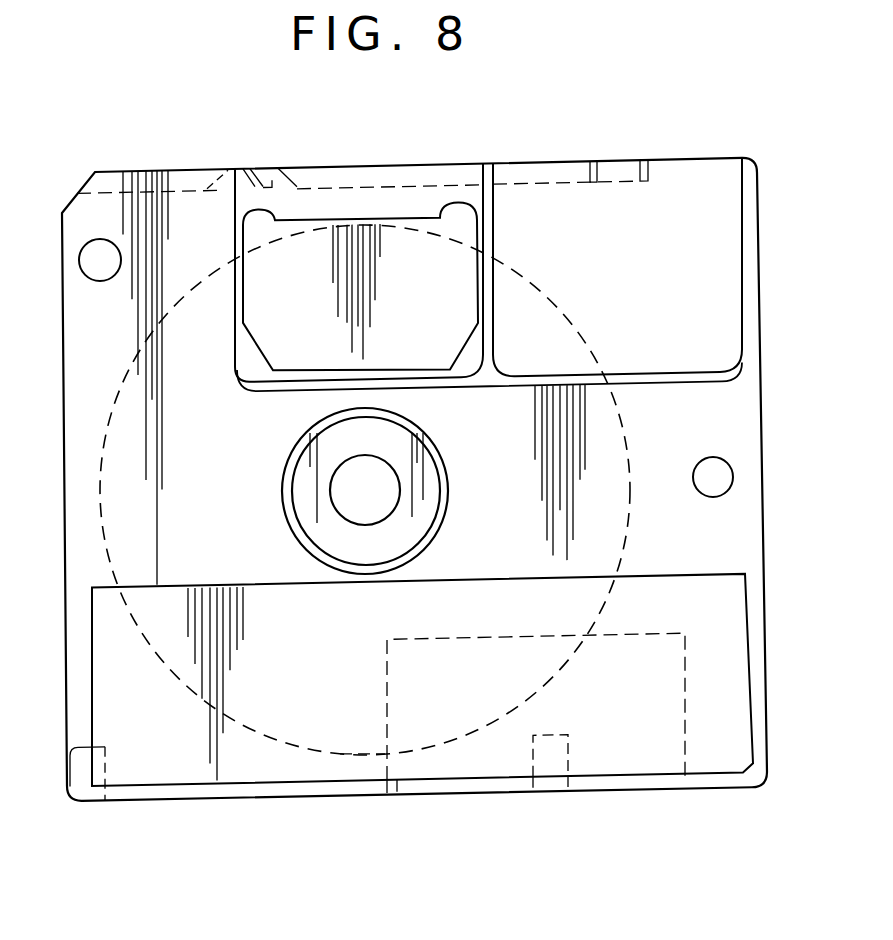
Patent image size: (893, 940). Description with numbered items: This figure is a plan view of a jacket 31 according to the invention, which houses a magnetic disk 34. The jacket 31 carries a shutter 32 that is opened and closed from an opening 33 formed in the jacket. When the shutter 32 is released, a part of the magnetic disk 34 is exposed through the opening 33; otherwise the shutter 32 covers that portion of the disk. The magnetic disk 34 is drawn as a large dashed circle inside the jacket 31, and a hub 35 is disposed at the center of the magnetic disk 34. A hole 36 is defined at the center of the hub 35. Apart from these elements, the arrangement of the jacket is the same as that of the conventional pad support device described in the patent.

The jacket 31 is at (730, 535).
The shutter 32 is at (717, 278).
The opening 33 is at (424, 222).
The magnetic disk 34 is at (600, 358).
The hub 35 is at (417, 515).
The hole 36 is at (343, 491).